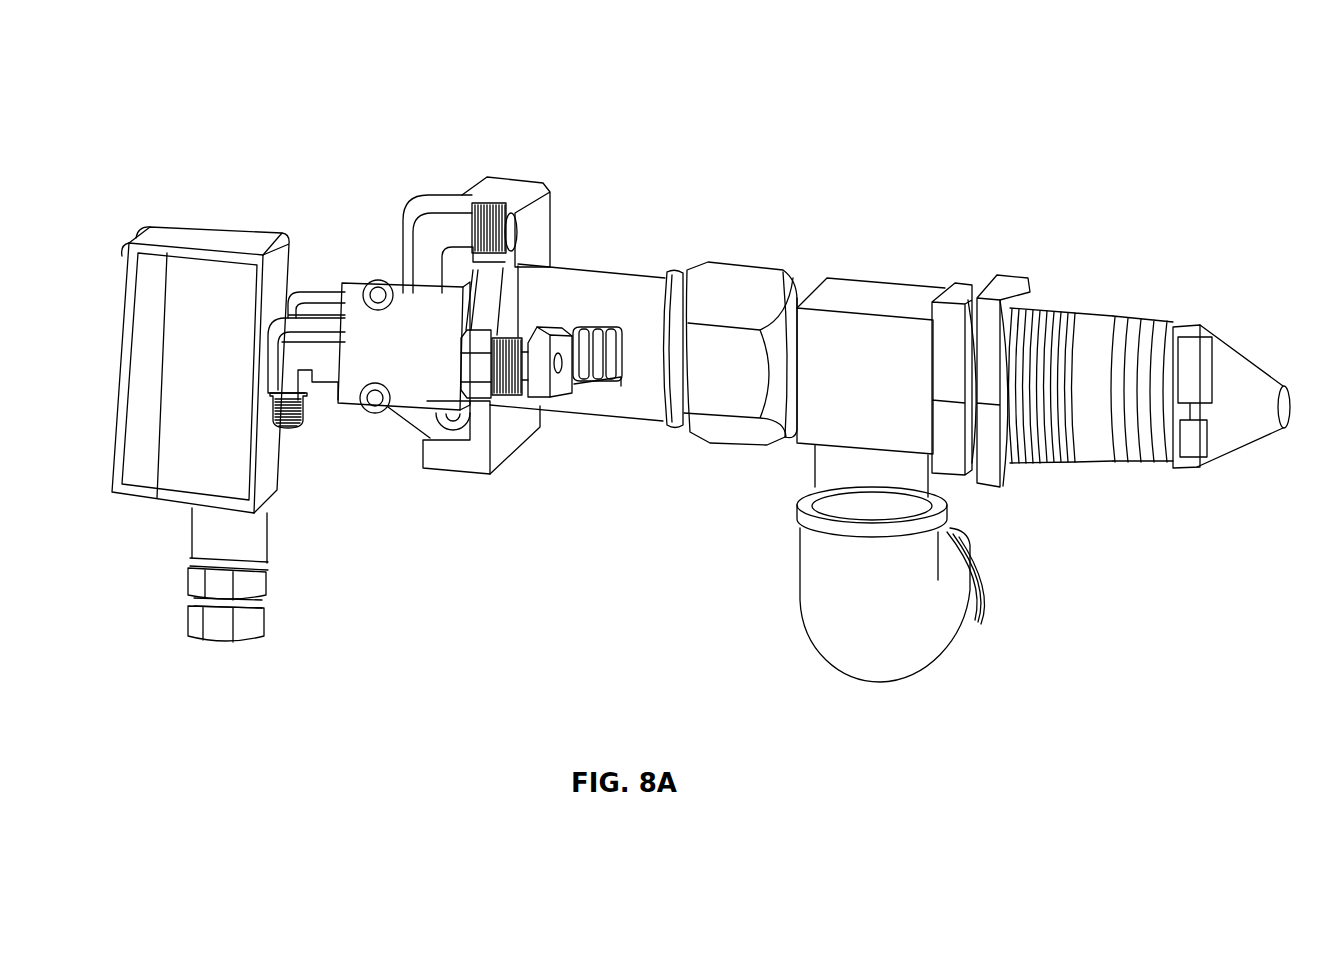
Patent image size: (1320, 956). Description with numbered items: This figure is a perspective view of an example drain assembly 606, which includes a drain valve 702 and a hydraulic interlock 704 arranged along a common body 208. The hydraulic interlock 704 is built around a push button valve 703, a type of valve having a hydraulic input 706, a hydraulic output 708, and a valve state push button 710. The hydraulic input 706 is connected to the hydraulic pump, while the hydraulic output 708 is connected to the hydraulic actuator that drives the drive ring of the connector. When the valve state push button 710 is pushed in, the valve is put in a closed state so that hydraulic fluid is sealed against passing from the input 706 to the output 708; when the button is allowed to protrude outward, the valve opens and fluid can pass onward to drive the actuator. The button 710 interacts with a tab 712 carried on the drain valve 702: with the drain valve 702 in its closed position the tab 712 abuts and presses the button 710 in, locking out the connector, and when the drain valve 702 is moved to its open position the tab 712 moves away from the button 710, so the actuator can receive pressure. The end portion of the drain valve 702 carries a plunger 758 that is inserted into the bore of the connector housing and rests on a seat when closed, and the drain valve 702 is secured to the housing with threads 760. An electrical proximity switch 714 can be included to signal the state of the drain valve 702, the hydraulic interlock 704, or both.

The nozzle assembly pipe body 208 is at (704, 563).
The drain assembly 606 is at (984, 112).
The drain valve 702 is at (1197, 324).
The push button valve 703 is at (415, 380).
The hydraulic interlock 704 is at (403, 445).
The hydraulic input 706 is at (285, 428).
The hydraulic output 708 is at (527, 212).
The valve state push button 710 is at (523, 378).
The tab 712 is at (553, 380).
The electrical proximity switch 714 is at (205, 272).
The plunger 758 is at (1230, 415).
The threads 760 is at (1070, 310).